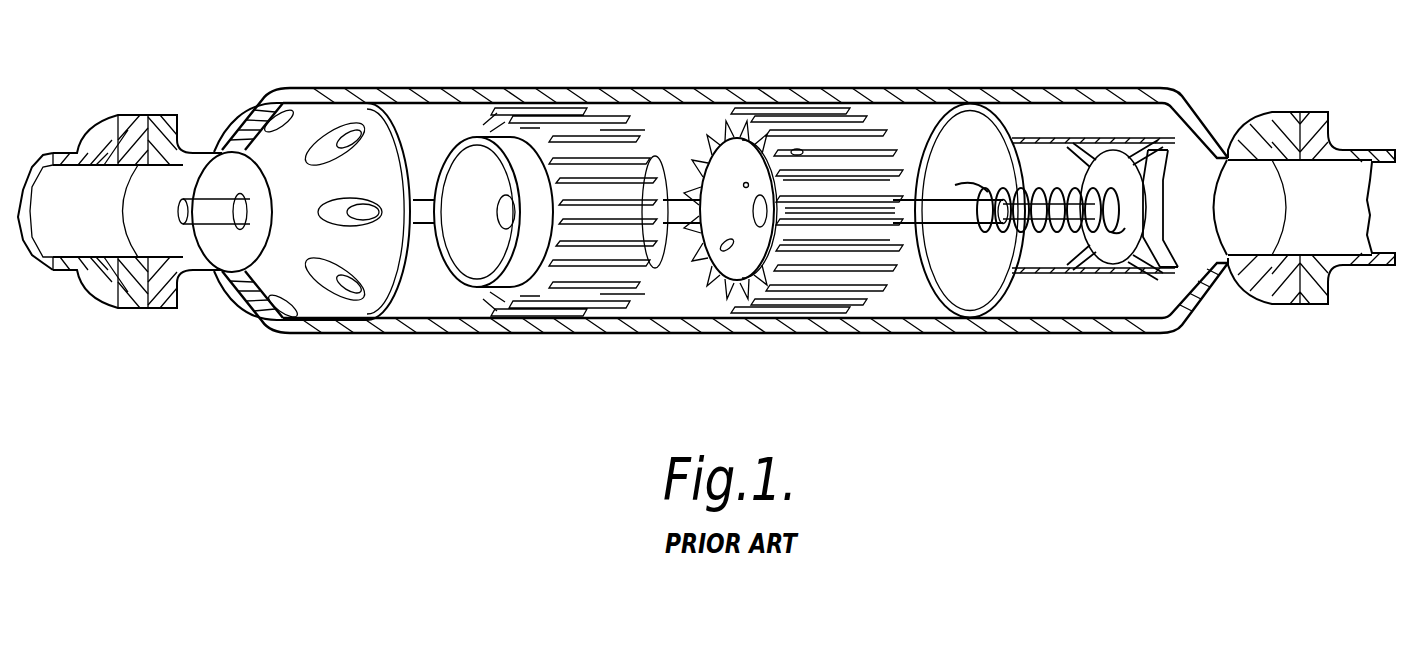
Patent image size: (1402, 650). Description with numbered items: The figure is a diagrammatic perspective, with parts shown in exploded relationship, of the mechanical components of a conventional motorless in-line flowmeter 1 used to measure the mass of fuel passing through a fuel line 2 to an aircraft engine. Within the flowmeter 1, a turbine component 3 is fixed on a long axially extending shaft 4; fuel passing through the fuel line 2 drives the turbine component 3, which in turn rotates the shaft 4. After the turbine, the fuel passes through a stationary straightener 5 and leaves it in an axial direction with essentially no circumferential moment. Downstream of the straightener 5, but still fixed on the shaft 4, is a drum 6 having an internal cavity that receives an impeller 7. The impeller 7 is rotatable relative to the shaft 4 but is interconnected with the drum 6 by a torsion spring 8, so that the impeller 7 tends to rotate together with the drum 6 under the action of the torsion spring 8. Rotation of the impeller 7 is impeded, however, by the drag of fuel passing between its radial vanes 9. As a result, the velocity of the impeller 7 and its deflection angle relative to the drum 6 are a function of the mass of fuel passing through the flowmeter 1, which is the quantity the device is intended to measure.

The flowmeter 1 is at (245, 88).
The fuel line 2 is at (65, 160).
The turbine component 3 is at (335, 300).
The shaft 4 is at (428, 215).
The straightener 5 is at (505, 110).
The drum 6 is at (1152, 293).
The impeller 7 is at (868, 120).
The torsion spring 8 is at (960, 182).
The radial vanes 9 is at (717, 117).